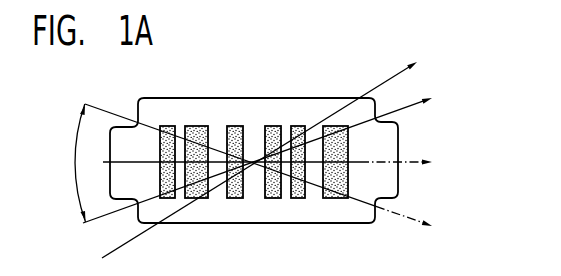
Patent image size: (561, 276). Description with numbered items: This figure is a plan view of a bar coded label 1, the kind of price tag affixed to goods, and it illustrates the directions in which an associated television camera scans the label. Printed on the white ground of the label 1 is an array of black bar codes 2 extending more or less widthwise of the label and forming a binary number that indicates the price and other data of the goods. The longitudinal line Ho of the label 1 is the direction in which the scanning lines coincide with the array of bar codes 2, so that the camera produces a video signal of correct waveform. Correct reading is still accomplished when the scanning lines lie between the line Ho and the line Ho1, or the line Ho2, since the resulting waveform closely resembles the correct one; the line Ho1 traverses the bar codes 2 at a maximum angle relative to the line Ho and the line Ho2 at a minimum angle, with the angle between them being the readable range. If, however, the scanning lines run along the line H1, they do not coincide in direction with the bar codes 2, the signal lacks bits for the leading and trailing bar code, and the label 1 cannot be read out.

The bar coded label 1 is at (293, 107).
The bar codes 2 is at (195, 126).
The longitudinal line Ho is at (281, 162).
The scanning line Ho1 is at (276, 154).
The scanning line Ho2 is at (277, 175).
The scanning line H1 is at (274, 152).